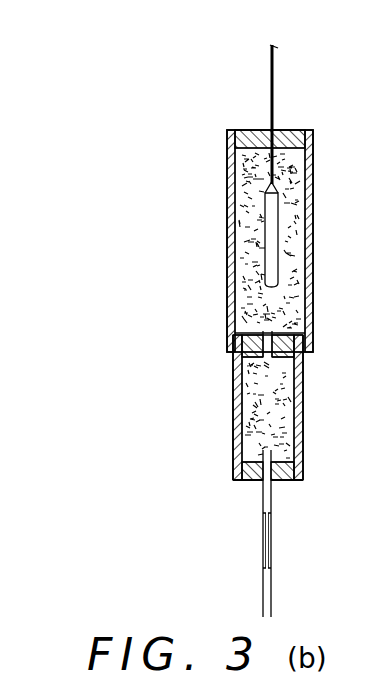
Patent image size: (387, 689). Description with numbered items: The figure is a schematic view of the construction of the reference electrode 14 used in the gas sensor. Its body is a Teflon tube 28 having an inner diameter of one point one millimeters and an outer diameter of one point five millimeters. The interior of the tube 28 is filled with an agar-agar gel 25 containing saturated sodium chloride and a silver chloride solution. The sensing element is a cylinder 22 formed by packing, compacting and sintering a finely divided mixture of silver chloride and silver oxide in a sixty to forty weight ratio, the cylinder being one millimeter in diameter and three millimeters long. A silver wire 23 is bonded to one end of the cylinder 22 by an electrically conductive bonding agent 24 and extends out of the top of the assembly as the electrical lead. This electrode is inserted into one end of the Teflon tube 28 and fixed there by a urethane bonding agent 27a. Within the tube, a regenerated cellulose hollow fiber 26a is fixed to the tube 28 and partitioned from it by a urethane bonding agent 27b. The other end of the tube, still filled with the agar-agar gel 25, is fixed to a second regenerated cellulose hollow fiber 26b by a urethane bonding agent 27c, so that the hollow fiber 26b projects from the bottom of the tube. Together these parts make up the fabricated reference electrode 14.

The reference electrode 14 is at (189, 159).
The cylinder 22 is at (272, 243).
The silver wire 23 is at (276, 82).
The electrically conductive bonding agent 24 is at (274, 190).
The agar-agar gel 25 is at (243, 257).
The regenerated cellulose hollow fiber 26a is at (268, 334).
The regenerated cellulose hollow fiber 26b is at (272, 547).
The urethane bonding agent 27a is at (298, 130).
The urethane bonding agent 27b is at (246, 360).
The urethane bonding agent 27c is at (254, 483).
The Teflon tube 28 is at (313, 337).